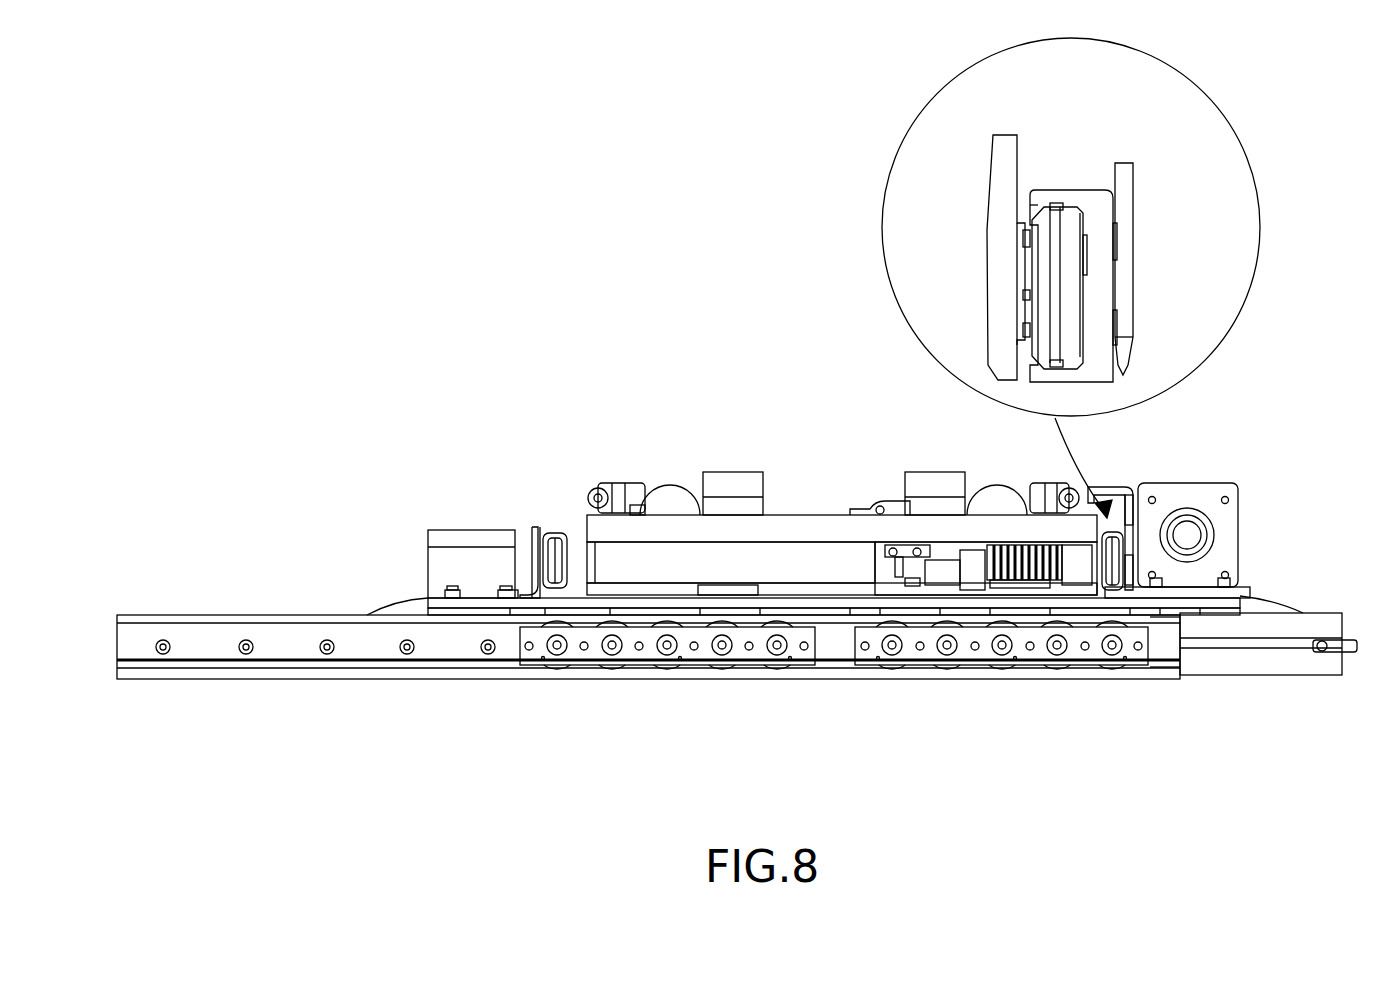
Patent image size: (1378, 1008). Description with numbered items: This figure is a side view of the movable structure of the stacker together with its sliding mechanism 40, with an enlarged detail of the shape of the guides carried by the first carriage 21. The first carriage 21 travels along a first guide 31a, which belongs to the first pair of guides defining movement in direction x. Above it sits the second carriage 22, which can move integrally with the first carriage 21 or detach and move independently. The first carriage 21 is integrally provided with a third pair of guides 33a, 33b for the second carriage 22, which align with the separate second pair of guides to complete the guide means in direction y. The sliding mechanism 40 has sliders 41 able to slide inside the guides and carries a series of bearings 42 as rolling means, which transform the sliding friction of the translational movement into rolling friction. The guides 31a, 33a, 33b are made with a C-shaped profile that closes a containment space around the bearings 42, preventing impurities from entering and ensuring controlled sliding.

The first carriage 21 is at (738, 598).
The second carriage 22 is at (798, 528).
The first guide 31a is at (295, 643).
The third guide 33a is at (1102, 217).
The third guide 33b is at (556, 533).
The sliding mechanism 40 is at (836, 688).
The slider 41 is at (638, 657).
The bearing 42 is at (552, 565).